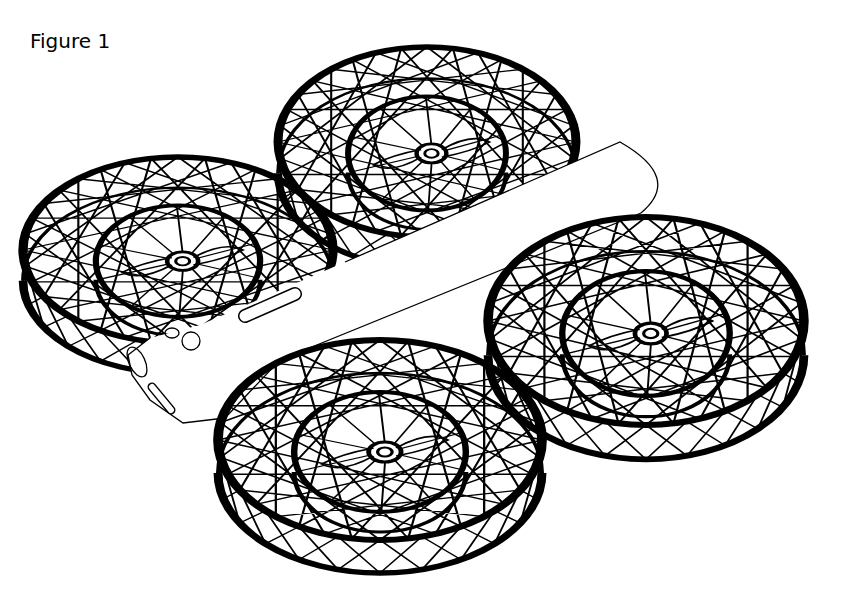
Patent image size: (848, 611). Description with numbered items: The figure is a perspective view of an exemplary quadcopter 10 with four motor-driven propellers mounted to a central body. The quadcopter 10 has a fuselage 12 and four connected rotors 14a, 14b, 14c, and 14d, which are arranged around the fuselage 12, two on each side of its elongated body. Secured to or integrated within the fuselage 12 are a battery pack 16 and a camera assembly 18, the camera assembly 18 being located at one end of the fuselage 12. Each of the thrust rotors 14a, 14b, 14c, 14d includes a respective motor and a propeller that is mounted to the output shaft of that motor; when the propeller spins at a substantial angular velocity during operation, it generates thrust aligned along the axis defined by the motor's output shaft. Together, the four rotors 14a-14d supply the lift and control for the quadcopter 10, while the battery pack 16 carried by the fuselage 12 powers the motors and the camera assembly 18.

The quadcopter 10 is at (708, 97).
The fuselage 12 is at (660, 175).
The rotor 14a is at (491, 548).
The rotor 14b is at (112, 168).
The rotor 14c is at (724, 438).
The rotor 14d is at (313, 91).
The battery pack 16 is at (437, 290).
The camera assembly 18 is at (140, 413).